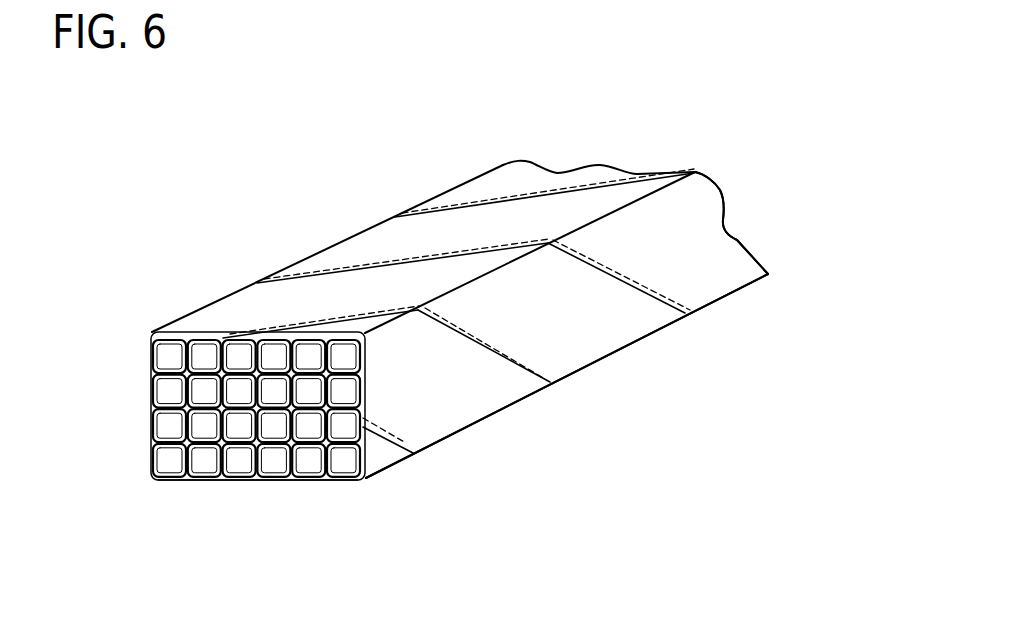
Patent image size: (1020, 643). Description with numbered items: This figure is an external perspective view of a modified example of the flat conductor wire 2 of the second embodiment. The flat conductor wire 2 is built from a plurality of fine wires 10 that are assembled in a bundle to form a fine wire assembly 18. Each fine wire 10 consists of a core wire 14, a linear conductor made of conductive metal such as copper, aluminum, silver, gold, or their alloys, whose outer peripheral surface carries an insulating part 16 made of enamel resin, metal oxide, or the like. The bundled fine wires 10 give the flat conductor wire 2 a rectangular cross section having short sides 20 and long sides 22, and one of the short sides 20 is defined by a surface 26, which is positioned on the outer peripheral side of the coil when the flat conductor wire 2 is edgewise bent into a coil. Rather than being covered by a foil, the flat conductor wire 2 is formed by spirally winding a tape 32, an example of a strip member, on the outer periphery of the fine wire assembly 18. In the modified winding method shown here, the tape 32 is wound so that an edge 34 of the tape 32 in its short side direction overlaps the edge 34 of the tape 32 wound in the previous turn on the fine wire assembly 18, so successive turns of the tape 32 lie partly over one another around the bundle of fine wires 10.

The flat conductor wire 2 is at (247, 203).
The fine wire 10 is at (100, 428).
The core wire 14 is at (167, 462).
The insulating part 16 is at (167, 481).
The fine wire assembly 18 is at (152, 385).
The short side 20 is at (361, 340).
The long side 22 is at (270, 331).
The surface 26 is at (717, 242).
The tape 32 is at (440, 412).
The edge 34 is at (510, 362).